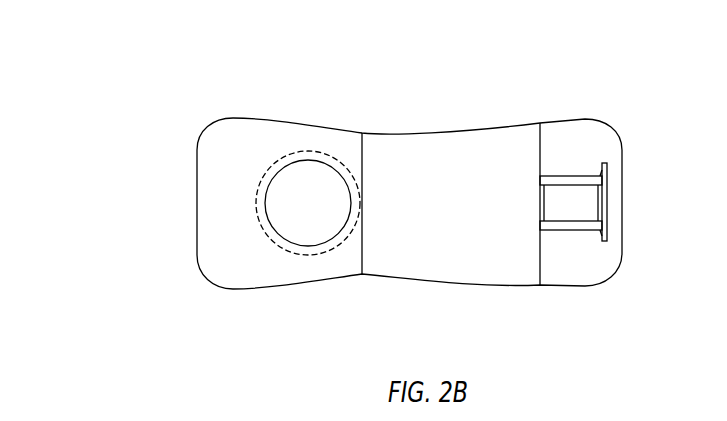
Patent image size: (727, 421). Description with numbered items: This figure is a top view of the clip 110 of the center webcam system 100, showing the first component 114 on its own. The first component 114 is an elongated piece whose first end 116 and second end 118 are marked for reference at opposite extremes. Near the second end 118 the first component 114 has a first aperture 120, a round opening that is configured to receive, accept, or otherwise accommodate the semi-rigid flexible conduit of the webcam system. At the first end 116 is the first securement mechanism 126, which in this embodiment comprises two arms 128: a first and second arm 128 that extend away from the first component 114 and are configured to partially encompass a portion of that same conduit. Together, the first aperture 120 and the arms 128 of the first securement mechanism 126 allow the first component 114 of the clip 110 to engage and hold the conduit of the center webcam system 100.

The center webcam system 100 is at (110, 95).
The clip 110 is at (402, 134).
The first component 114 is at (477, 189).
The first end 116 is at (622, 169).
The second end 118 is at (198, 178).
The first aperture 120 is at (292, 155).
The first securement mechanism 126 is at (605, 224).
The arms 128 is at (567, 177).